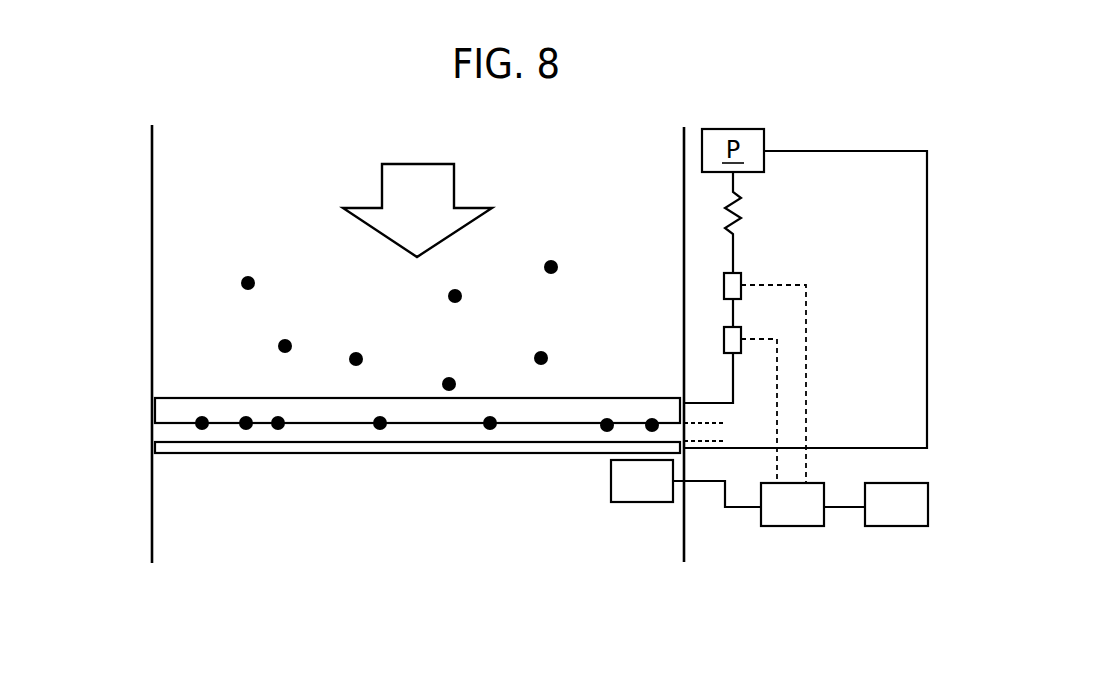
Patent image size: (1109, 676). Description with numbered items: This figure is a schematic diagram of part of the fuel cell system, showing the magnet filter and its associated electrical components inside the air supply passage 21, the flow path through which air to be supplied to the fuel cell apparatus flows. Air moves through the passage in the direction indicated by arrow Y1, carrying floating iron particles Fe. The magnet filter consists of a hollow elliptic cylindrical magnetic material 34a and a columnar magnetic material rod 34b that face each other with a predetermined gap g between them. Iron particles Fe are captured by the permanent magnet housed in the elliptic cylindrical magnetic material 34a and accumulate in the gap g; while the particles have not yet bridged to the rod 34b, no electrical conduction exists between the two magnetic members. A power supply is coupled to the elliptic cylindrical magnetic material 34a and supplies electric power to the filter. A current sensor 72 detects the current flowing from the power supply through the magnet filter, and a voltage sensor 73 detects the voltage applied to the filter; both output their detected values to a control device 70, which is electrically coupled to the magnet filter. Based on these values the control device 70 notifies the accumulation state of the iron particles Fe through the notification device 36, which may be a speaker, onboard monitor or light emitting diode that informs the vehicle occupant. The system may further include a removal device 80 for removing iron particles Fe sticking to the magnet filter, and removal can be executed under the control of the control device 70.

The air supply passage 21 is at (150, 172).
The flow direction of processing fluid Y1 is at (448, 181).
The iron particles Fe is at (556, 265).
The hollow elliptic cylindrical magnetic material 34a is at (153, 410).
The columnar magnetic material rod 34b is at (155, 447).
The gap g is at (713, 430).
The current sensor 72 is at (742, 276).
The voltage sensor 73 is at (742, 330).
The removal device 80 is at (640, 502).
The control device 70 is at (792, 527).
The notification device 36 is at (893, 527).